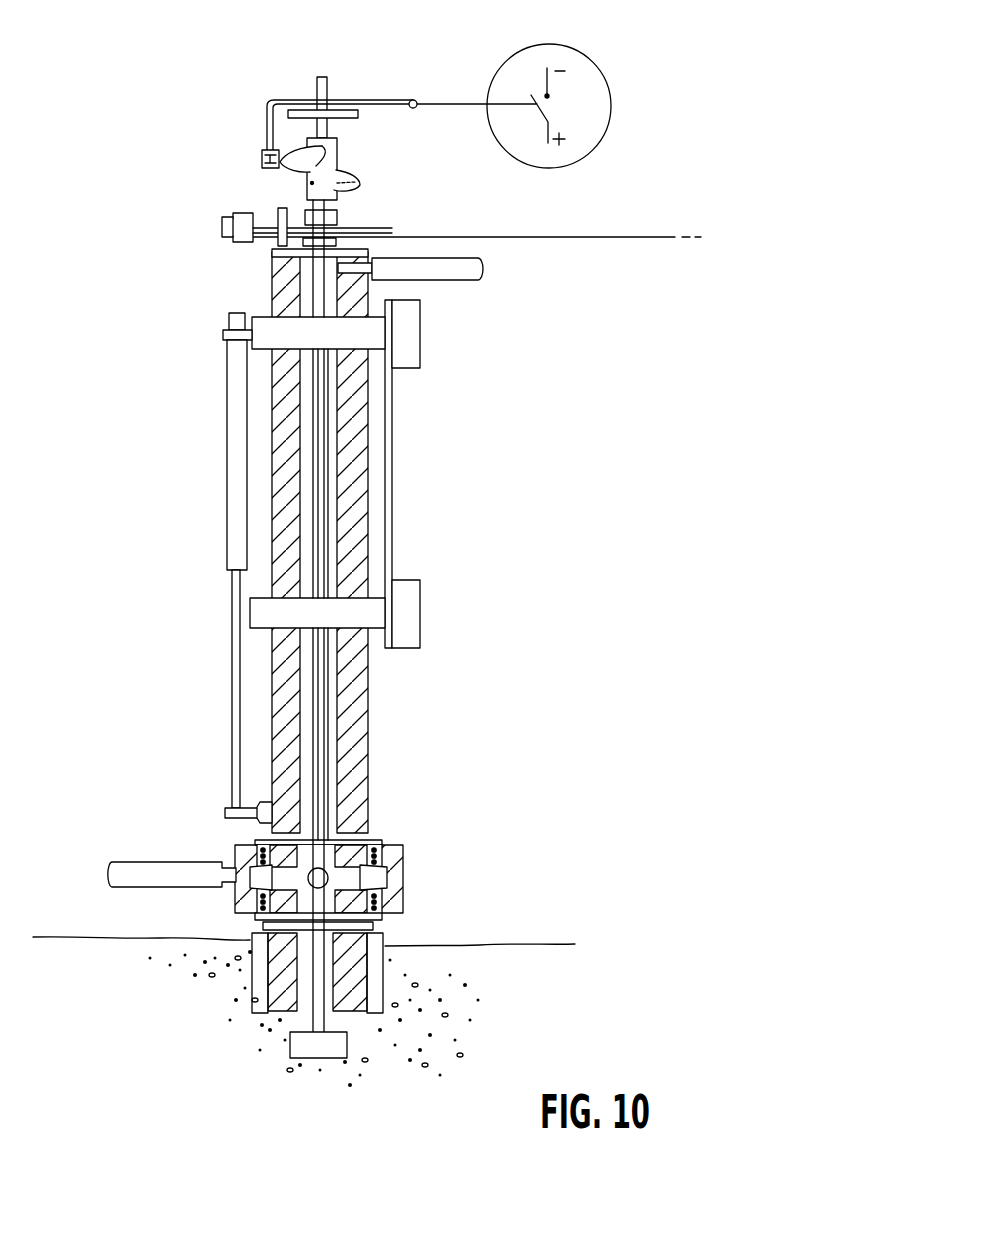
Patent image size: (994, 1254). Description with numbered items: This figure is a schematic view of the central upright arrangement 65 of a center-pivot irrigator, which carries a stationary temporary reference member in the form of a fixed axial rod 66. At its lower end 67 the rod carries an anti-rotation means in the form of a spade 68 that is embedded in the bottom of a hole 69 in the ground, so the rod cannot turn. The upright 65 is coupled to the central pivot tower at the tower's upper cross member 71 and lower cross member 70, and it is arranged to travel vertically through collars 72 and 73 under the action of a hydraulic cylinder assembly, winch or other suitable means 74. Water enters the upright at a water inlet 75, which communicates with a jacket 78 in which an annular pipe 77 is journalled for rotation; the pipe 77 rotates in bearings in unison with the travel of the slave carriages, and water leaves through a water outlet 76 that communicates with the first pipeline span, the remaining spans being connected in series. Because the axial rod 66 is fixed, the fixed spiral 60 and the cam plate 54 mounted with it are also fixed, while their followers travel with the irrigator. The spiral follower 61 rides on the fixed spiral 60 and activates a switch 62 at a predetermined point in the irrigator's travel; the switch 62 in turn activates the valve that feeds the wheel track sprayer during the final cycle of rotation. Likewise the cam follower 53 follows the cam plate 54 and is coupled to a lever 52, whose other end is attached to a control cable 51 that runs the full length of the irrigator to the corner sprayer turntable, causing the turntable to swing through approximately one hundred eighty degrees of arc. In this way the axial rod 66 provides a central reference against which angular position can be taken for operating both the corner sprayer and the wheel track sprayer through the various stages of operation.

The control cable 51 is at (596, 237).
The lever 52 is at (265, 215).
The cam follower 53 is at (246, 246).
The cam plate 54 is at (380, 228).
The fixed spiral 60 is at (370, 166).
The spiral follower 61 is at (262, 158).
The switch 62 is at (583, 86).
The central upright arrangement 65 is at (454, 541).
The fixed axial rod 66 is at (320, 688).
The lower end 67 is at (216, 1065).
The spade 68 is at (330, 1058).
The hole 69 is at (382, 954).
The lower cross member 70 is at (410, 635).
The upper cross member 71 is at (416, 340).
The collar 72 is at (370, 345).
The collar 73 is at (362, 612).
The hydraulic cylinder assembly or winch 74 is at (230, 520).
The water inlet 75 is at (146, 815).
The water outlet 76 is at (450, 283).
The annular pipe 77 is at (362, 783).
The jacket 78 is at (423, 854).